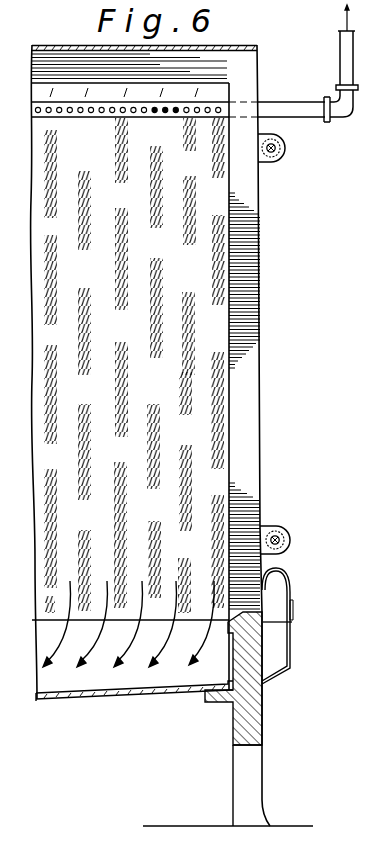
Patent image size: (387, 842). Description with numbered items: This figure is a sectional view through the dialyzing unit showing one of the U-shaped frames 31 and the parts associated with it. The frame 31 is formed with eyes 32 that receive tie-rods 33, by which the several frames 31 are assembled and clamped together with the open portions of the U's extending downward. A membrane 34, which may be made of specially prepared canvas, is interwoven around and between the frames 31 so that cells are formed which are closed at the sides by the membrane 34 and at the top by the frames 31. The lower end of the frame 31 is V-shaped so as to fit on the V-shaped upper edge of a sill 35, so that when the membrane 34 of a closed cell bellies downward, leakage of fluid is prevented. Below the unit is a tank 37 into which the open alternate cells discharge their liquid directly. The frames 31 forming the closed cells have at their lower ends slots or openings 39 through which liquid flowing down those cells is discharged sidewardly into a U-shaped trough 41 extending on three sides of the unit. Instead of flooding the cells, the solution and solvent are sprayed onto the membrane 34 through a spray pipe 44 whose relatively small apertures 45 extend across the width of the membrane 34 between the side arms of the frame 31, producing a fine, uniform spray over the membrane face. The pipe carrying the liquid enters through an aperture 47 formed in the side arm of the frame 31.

The U-shaped frame 31 is at (257, 432).
The eye 32 is at (283, 147).
The tie-rod 33 is at (275, 149).
The membrane 34 is at (245, 46).
The sill 35 is at (294, 613).
The tank 37 is at (135, 679).
The slot or opening 39 is at (256, 597).
The U-shaped trough 41 is at (277, 652).
The spray pipe 44 is at (213, 118).
The aperture 45 is at (175, 113).
The aperture in side arm 47 is at (261, 103).